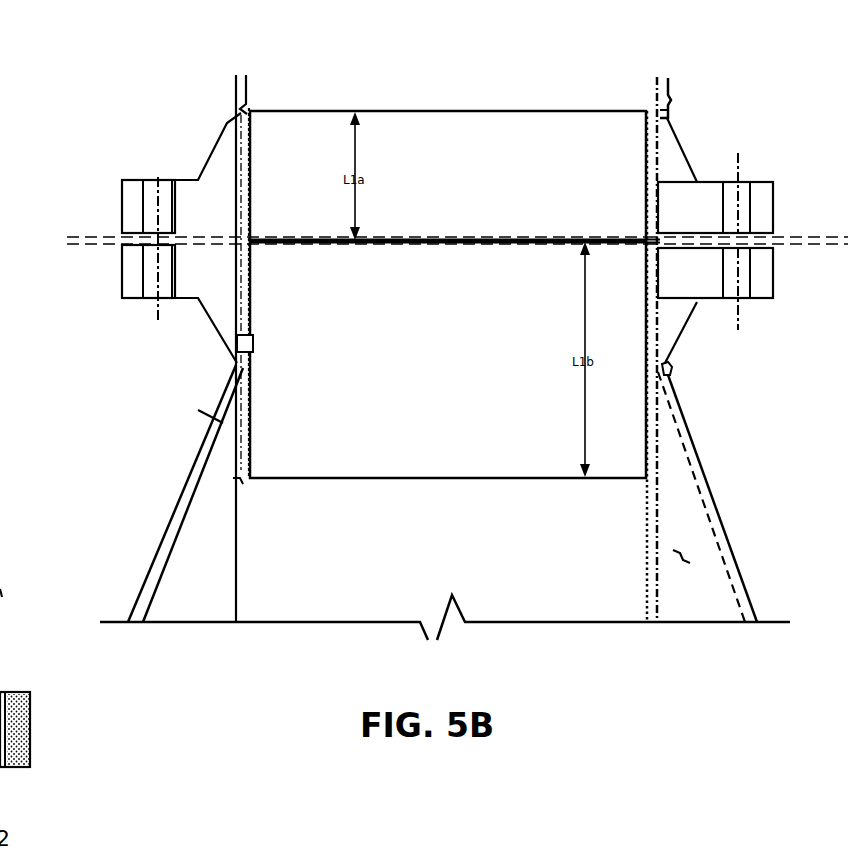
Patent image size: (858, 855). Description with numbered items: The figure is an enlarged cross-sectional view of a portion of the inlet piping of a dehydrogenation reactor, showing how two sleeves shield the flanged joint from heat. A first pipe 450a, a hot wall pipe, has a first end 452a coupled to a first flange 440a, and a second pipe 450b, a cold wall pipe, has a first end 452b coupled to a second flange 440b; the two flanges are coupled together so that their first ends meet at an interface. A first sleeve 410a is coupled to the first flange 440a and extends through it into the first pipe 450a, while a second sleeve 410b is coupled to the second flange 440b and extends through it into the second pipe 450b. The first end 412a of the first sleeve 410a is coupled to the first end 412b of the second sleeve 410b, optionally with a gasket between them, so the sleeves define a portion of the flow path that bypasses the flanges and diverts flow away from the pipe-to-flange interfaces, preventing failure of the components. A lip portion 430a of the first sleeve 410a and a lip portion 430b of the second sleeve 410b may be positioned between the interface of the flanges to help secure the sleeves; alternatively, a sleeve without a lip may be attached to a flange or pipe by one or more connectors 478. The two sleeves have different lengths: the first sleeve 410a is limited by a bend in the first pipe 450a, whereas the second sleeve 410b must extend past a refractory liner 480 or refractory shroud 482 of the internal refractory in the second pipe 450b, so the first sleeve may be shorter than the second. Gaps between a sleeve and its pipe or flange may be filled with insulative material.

The first sleeve 410a is at (292, 86).
The second sleeve 410b is at (466, 493).
The first end of first sleeve 412a is at (536, 222).
The first end of second sleeve 412b is at (536, 260).
The lip portion of first sleeve 430a is at (782, 233).
The lip portion of second sleeve 430b is at (100, 244).
The first flange 440a is at (678, 150).
The second flange 440b is at (773, 286).
The first pipe 450a is at (667, 77).
The second pipe 450b is at (683, 427).
The first end of first pipe 452a is at (689, 93).
The first end of second pipe 452b is at (692, 374).
The connector 478 is at (240, 352).
The refractory liner 480 is at (680, 553).
The refractory shroud 482 is at (660, 508).